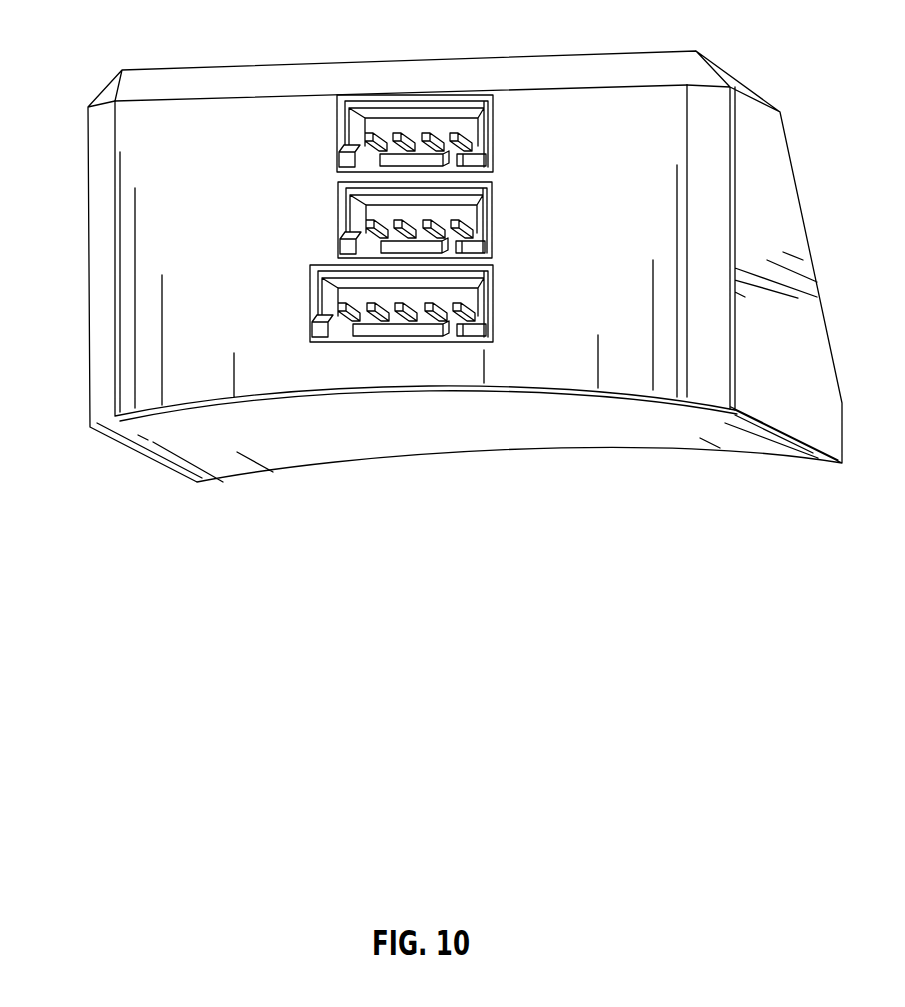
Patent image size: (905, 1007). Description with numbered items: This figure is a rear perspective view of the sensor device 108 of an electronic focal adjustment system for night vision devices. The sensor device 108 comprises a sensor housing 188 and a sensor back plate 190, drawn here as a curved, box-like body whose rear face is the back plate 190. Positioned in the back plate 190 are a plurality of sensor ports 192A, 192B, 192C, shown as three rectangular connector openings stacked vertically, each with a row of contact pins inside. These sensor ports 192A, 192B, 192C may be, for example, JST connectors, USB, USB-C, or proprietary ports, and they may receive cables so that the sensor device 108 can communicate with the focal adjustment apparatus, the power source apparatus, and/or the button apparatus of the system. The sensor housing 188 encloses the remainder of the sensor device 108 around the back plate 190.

The sensor device 108 is at (193, 97).
The sensor housing 188 is at (305, 80).
The sensor back plate 190 is at (128, 218).
The sensor port 192A is at (413, 130).
The sensor port 192B is at (443, 212).
The sensor port 192C is at (388, 300).